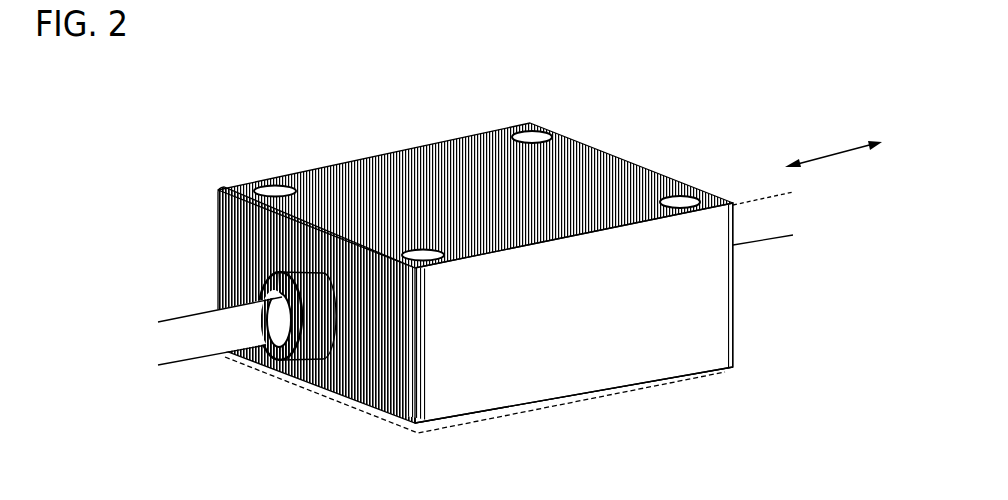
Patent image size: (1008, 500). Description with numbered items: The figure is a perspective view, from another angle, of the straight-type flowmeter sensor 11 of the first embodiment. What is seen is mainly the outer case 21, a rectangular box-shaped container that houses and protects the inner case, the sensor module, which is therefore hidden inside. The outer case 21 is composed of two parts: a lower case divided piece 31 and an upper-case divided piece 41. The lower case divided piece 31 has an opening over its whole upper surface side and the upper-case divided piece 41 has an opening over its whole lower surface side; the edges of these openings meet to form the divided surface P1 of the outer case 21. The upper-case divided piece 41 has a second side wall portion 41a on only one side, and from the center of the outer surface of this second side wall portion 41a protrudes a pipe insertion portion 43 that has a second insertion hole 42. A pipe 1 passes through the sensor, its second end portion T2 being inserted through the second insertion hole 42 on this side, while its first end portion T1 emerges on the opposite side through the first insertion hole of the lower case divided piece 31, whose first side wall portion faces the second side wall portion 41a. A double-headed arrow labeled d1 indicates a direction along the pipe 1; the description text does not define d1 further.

The straight-type flowmeter sensor 11 is at (160, 125).
The outer case 21 is at (446, 309).
The lower case divided piece 31 is at (518, 410).
The upper-case divided piece 41 is at (446, 286).
The second side wall portion 41a is at (248, 255).
The second insertion hole 42 is at (288, 322).
The pipe insertion portion 43 is at (317, 345).
The pipe 1 is at (757, 207).
The first end portion T1 is at (780, 228).
The second end portion T2 is at (176, 347).
The divided surface P1 is at (628, 293).
The first direction d1 is at (832, 165).